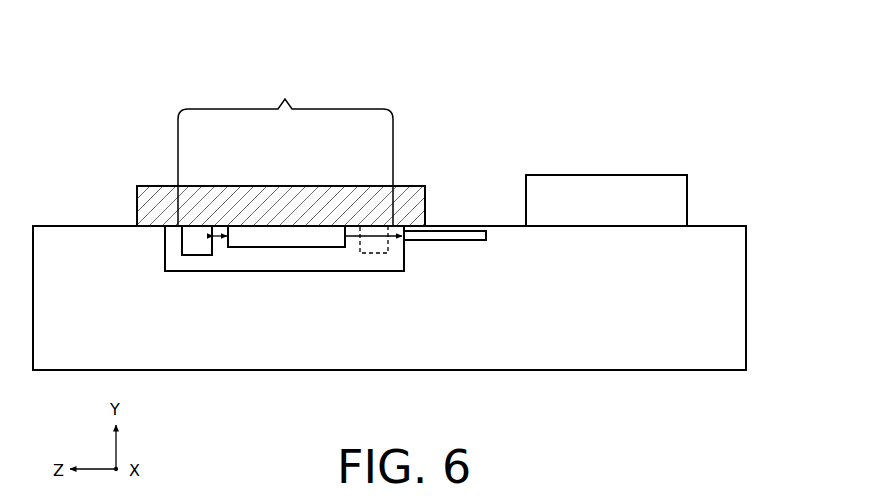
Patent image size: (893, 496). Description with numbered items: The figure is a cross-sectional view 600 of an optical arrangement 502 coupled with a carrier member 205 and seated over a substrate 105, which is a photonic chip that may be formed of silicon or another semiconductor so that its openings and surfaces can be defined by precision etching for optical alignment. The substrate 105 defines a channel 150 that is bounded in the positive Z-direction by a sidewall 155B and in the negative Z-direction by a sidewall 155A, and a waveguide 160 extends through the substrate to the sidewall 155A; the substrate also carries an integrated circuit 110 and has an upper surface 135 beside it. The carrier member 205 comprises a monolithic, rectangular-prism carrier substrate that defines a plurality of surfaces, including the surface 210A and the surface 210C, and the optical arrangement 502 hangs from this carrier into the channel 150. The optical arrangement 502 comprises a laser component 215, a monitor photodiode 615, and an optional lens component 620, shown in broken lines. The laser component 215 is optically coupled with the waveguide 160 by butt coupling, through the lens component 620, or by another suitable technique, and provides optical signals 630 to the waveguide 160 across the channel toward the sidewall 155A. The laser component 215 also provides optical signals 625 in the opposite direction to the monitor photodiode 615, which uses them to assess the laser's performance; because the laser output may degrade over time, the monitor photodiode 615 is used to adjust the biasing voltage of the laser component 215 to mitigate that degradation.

The substrate 105 is at (640, 370).
The integrated circuit 110 is at (606, 200).
The top surface of substrate 135 is at (712, 224).
The channel 150 is at (285, 255).
The sidewall 155A is at (403, 252).
The sidewall 155B is at (167, 250).
The waveguide 160 is at (459, 231).
The carrier member 205 is at (405, 186).
The surface 210A is at (170, 223).
The surface 210C is at (218, 192).
The laser component 215 is at (283, 232).
The optical arrangement 502 is at (285, 150).
The cross-sectional view 600 is at (608, 93).
The monitor photodiode 615 is at (183, 241).
The lens component 620 is at (372, 222).
The optical signals 625 is at (228, 243).
The optical signals 630 is at (352, 236).